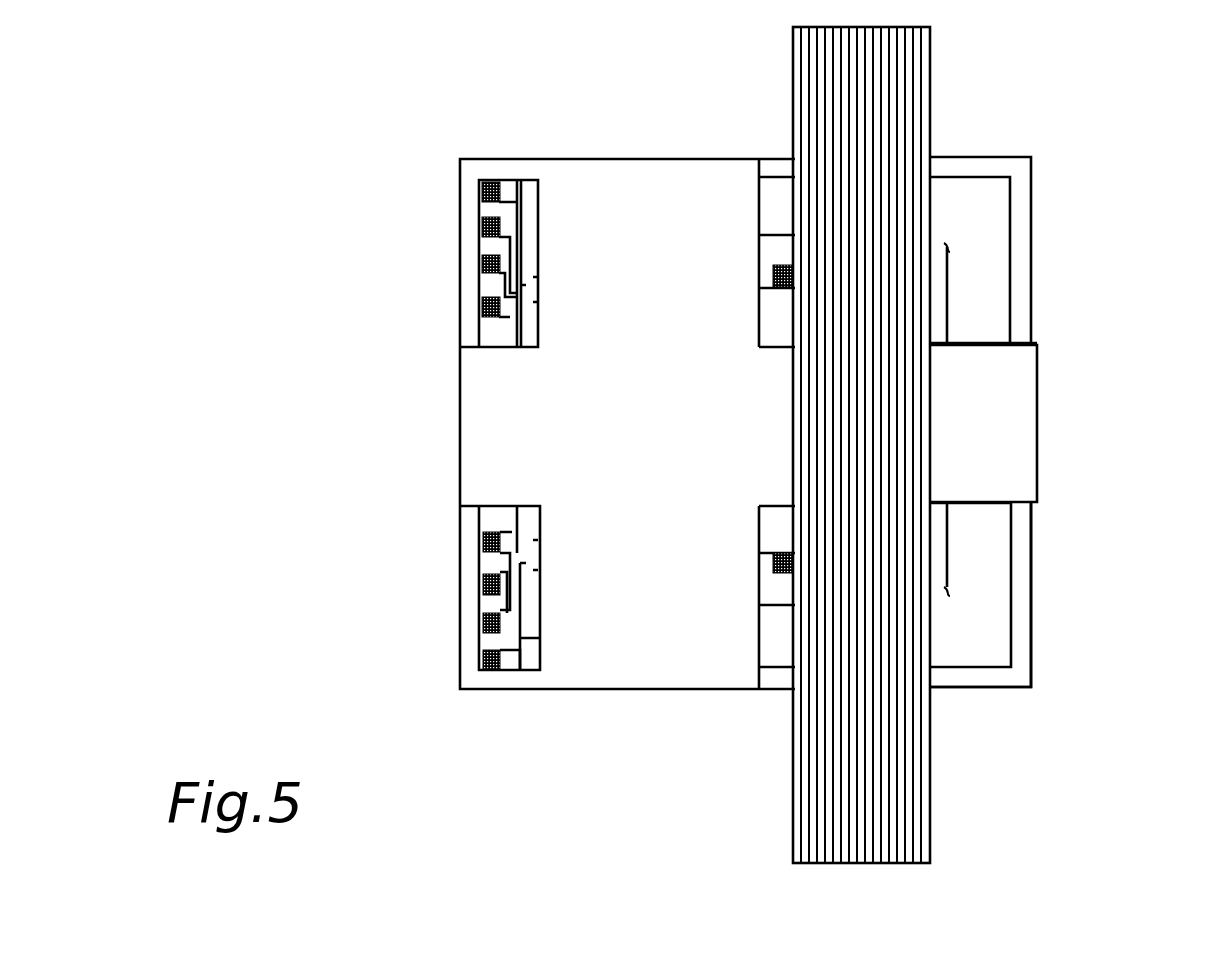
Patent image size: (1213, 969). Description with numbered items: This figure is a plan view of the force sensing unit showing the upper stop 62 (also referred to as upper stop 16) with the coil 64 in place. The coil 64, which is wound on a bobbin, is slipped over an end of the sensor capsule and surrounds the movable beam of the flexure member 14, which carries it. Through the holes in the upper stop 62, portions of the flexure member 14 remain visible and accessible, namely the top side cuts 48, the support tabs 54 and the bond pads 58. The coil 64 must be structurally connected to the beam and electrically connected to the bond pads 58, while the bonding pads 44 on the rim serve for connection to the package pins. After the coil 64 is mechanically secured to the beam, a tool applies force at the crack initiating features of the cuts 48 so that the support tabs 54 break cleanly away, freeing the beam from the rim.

The flexure member 14 is at (1037, 570).
The upper stop 16 is at (1042, 398).
The bonding pads 44 is at (459, 530).
The top side cuts 48 is at (947, 307).
The support tabs 54 is at (934, 238).
The bond pads 58 is at (773, 276).
The upper stop 62 is at (629, 440).
The coil 64 is at (930, 77).